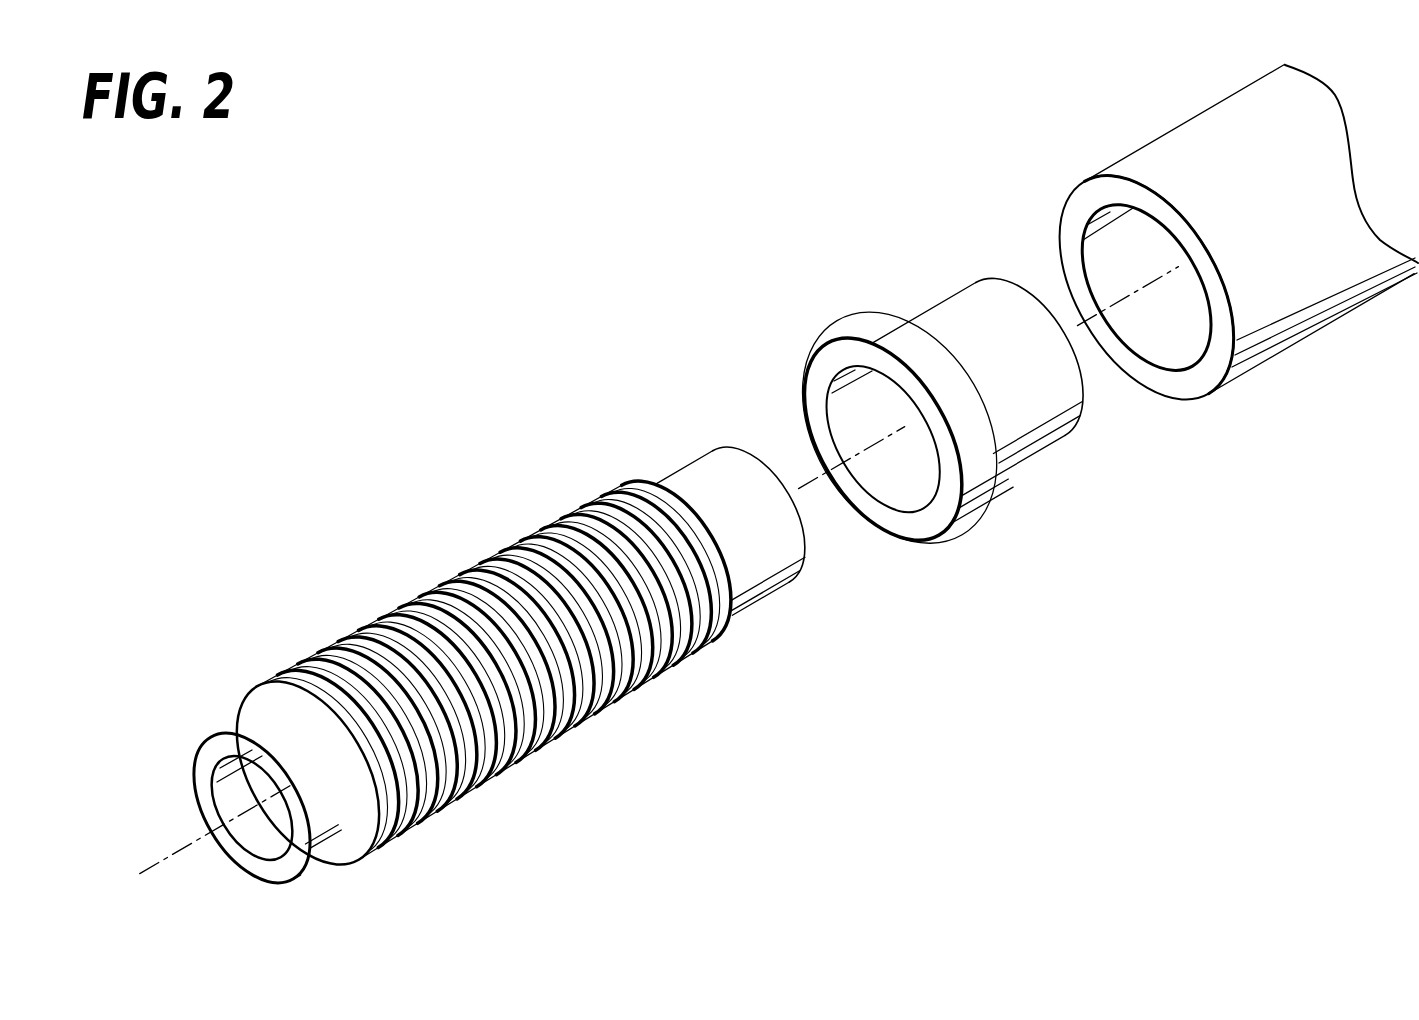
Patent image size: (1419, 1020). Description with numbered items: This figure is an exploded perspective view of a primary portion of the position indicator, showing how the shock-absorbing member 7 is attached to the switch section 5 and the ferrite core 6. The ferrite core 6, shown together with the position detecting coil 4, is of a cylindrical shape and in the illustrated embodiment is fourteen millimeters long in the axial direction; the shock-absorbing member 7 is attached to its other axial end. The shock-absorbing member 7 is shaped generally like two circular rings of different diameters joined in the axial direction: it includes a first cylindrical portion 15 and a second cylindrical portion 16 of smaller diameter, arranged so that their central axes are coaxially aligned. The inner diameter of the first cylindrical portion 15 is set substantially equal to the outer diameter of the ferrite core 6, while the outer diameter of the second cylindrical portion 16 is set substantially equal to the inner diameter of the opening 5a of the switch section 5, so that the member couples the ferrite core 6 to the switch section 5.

The position detecting coil 4 is at (487, 785).
The switch section 5 is at (1330, 292).
The opening 5a is at (1181, 362).
The ferrite core 6 is at (777, 593).
The shock-absorbing member 7 is at (868, 306).
The first cylindrical portion 15 is at (979, 503).
The second cylindrical portion 16 is at (1047, 452).